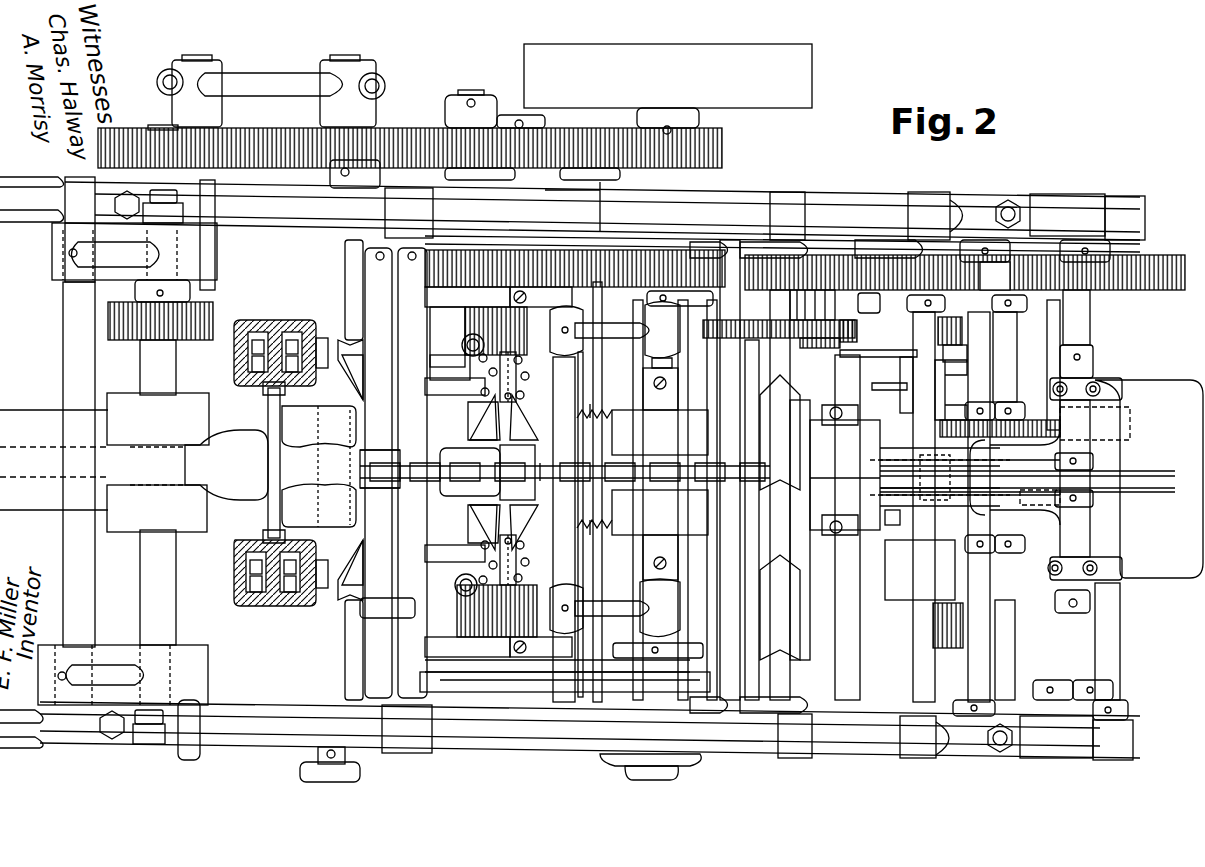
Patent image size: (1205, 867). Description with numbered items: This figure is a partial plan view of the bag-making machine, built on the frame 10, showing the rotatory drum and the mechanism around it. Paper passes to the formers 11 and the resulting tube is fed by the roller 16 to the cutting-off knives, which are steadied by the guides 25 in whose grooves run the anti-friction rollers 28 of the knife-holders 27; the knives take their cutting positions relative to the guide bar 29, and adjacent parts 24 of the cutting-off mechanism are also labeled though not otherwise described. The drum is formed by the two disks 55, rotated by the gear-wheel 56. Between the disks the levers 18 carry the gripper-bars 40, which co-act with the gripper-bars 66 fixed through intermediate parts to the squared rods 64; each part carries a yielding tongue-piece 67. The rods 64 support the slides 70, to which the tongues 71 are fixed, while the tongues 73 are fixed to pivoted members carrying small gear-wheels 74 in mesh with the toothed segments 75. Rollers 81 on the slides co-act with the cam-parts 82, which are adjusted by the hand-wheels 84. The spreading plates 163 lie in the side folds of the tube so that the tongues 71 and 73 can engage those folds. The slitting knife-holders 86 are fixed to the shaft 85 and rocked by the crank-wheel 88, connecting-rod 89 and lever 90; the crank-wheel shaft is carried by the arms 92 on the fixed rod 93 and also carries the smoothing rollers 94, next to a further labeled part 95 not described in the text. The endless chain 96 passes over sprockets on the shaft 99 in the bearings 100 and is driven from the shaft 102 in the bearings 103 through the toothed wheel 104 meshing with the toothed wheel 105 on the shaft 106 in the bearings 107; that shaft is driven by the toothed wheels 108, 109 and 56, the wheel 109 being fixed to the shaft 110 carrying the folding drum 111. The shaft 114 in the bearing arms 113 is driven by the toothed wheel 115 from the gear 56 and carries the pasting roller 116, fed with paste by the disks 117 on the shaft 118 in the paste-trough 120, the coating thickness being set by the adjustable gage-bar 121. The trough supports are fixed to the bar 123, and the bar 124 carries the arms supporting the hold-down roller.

The frame 10 is at (587, 468).
The formers 11 is at (54, 460).
The feed roller 16 is at (160, 417).
The levers 18 is at (455, 479).
The bearing 24 is at (252, 355).
The guides 25 is at (281, 465).
The knife-holders 27 is at (261, 462).
The anti-friction rollers 28 is at (255, 377).
The guide bar 29 is at (199, 465).
The gripper-bars 40 is at (565, 478).
The disks 55 is at (467, 472).
The gear-wheel 56 is at (805, 270).
The squared rods 64 is at (541, 472).
The gripper-bars 66 is at (510, 472).
The tongue-piece 67 is at (470, 472).
The slides 70 is at (470, 370).
The tongues 71 is at (498, 469).
The tongues 73 is at (435, 470).
The small gear-wheels 74 is at (447, 337).
The toothed segments 75 is at (482, 471).
The rollers 81 is at (466, 352).
The cam-parts 82 is at (331, 470).
The hand-wheels 84 is at (410, 467).
The shaft 85 is at (378, 473).
The knife-holders 86 is at (380, 457).
The crank-wheel 88 is at (658, 650).
The connecting-rod 89 is at (565, 676).
The lever 90 is at (387, 629).
The arms 92 is at (664, 500).
The fixed rod 93 is at (599, 492).
The rollers 94 is at (647, 500).
The plate 95 is at (680, 299).
The endless chain 96 is at (515, 468).
The shaft 99 is at (412, 473).
The bearings 100 is at (407, 470).
The shaft 102 is at (734, 470).
The bearings 103 is at (749, 475).
The toothed wheel 104 is at (779, 321).
The toothed wheel 105 is at (845, 334).
The shaft 106 is at (786, 495).
The bearings 107 is at (796, 475).
The toothed wheel 108 is at (812, 306).
The toothed wheel 109 is at (859, 298).
The shaft 110 is at (836, 523).
The folding drum 111 is at (863, 440).
The bearing arms 113 is at (931, 475).
The shaft 114 is at (934, 498).
The toothed wheel 115 is at (907, 250).
The pasting roller 116 is at (965, 484).
The disks 117 is at (1027, 481).
The shaft 118 is at (1089, 435).
The paste-trough 120 is at (1086, 479).
The adjustable gage-bar 121 is at (1000, 649).
The bar 123 is at (1087, 641).
The bar 124 is at (972, 498).
The spreading plates 163 is at (319, 466).